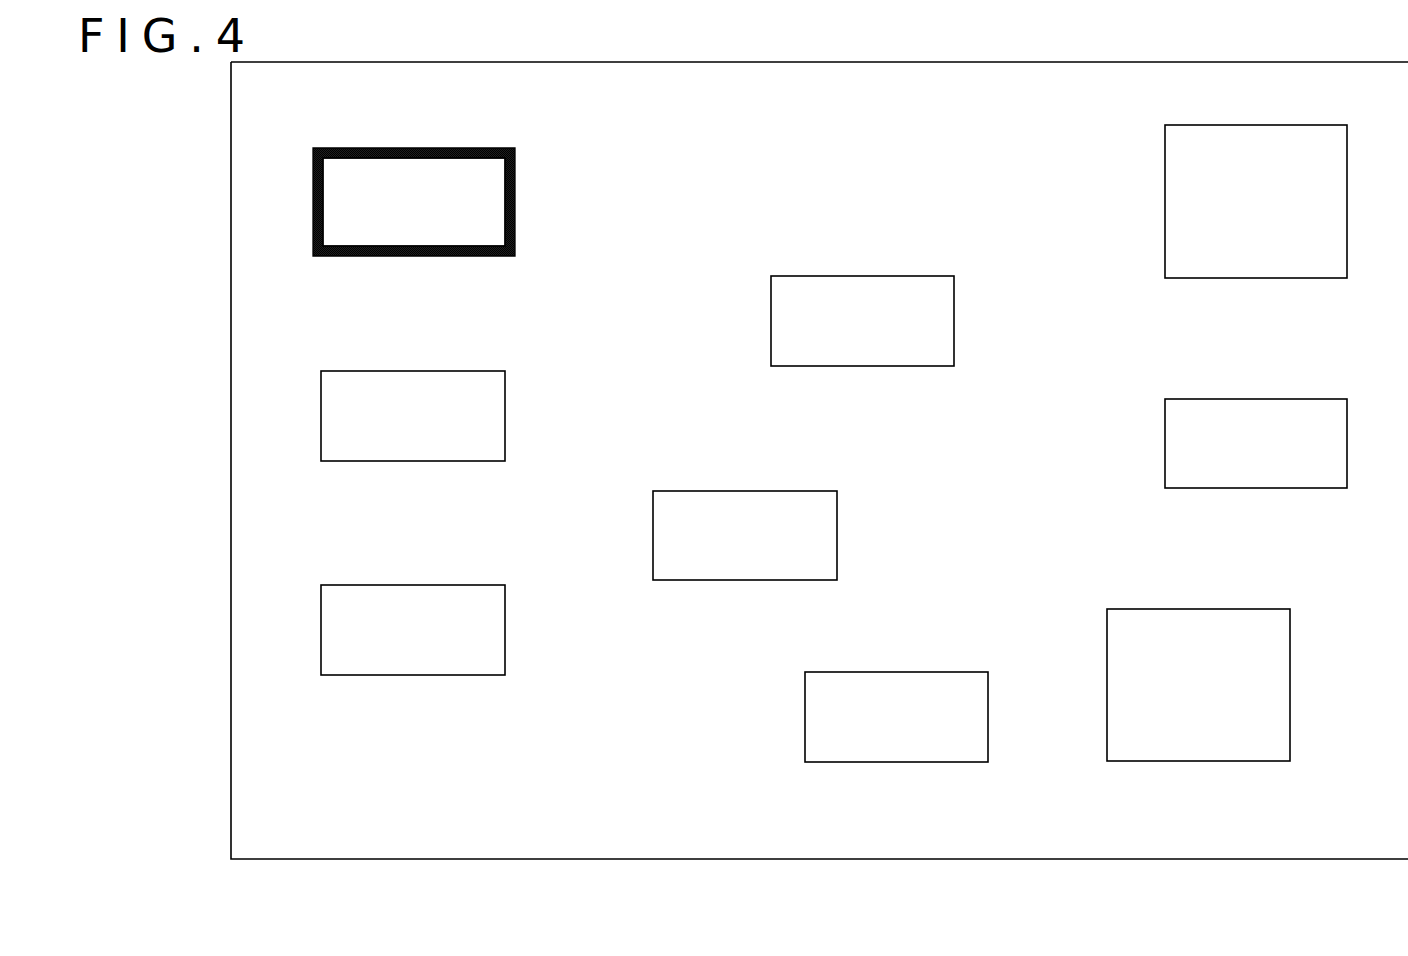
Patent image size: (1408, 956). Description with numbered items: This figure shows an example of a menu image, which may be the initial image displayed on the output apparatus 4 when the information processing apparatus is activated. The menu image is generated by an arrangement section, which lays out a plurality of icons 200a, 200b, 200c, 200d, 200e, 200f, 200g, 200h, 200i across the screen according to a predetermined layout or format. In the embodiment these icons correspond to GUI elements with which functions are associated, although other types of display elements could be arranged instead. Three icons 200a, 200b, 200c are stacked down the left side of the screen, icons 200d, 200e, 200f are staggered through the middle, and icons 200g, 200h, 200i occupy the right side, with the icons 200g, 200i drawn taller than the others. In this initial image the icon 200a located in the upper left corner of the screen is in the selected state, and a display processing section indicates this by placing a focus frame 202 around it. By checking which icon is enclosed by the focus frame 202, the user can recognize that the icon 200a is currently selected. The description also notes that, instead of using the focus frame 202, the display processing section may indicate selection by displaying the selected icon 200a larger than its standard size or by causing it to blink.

The output apparatus 4 is at (842, 931).
The focus frame 202 is at (358, 150).
The icon 200a is at (437, 192).
The icon 200b is at (413, 385).
The icon 200c is at (413, 598).
The icon 200d is at (862, 290).
The icon 200e is at (745, 505).
The icon 200f is at (896, 685).
The icon 200g is at (1255, 137).
The icon 200h is at (1255, 410).
The icon 200i is at (1197, 620).